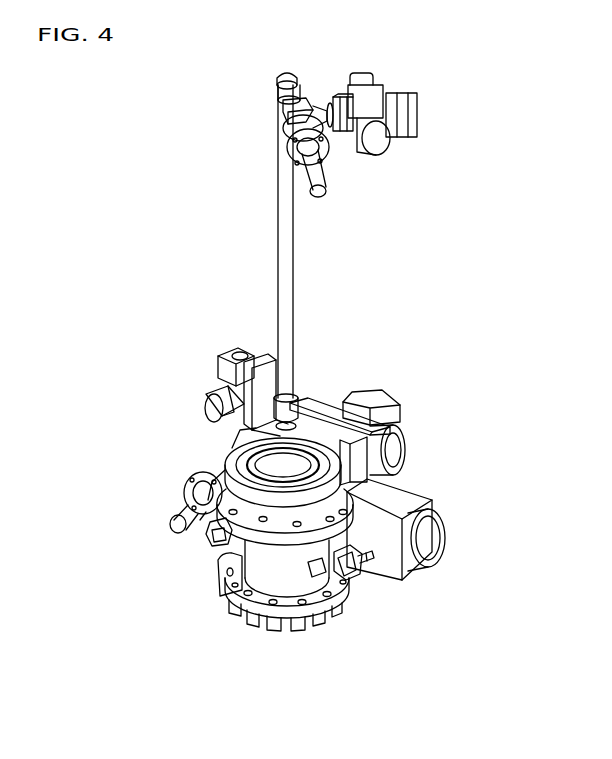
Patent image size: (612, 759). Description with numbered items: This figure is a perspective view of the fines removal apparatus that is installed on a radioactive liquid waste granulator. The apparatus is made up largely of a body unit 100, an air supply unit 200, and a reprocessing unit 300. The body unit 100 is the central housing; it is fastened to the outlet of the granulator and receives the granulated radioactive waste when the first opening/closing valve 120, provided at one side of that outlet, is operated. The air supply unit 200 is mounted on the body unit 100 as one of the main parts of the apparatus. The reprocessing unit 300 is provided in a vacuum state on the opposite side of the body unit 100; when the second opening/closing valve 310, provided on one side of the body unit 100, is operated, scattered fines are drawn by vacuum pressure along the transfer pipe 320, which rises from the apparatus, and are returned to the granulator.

The body unit 100 is at (268, 570).
The first opening/closing valve 120 is at (398, 446).
The air supply unit 200 is at (349, 574).
The reprocessing unit 300 is at (218, 532).
The second opening/closing valve 310 is at (222, 388).
The transfer pipe 320 is at (286, 286).